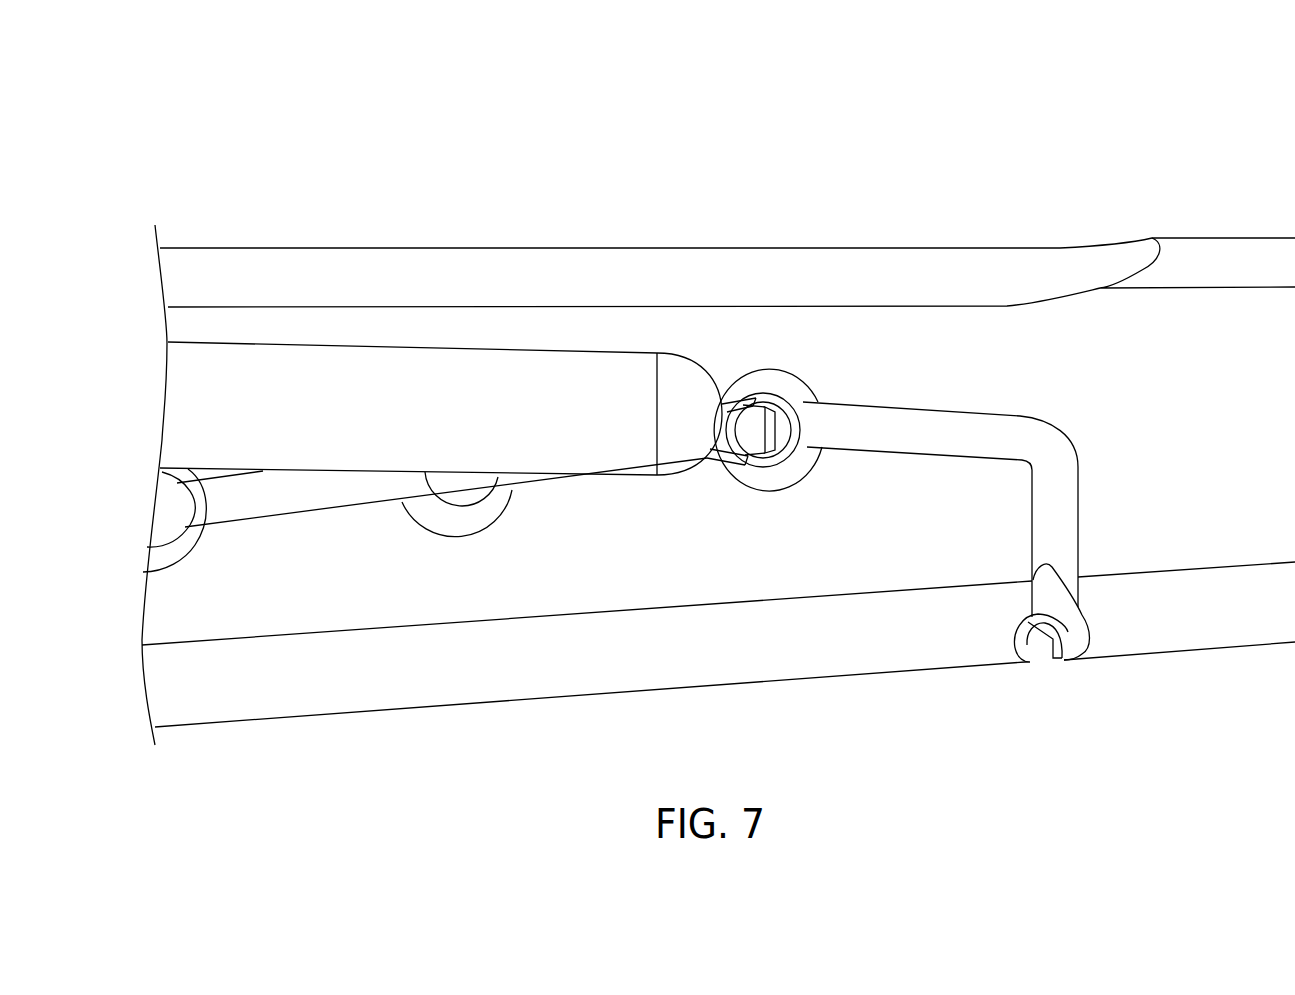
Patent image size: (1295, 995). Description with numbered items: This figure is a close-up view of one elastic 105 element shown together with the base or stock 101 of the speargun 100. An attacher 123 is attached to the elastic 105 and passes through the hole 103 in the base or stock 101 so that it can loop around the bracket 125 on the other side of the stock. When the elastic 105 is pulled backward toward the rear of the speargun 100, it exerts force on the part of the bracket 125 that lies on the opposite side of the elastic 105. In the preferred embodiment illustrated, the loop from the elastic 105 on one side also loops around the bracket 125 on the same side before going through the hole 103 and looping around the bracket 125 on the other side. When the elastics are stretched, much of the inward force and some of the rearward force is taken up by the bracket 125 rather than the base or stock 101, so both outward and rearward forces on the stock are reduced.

The speargun 100 is at (713, 140).
The base or stock 101 is at (1007, 304).
The hole 103 is at (743, 482).
The elastic element 105 is at (403, 345).
The attacher 123 is at (757, 393).
The bracket 125 is at (962, 462).